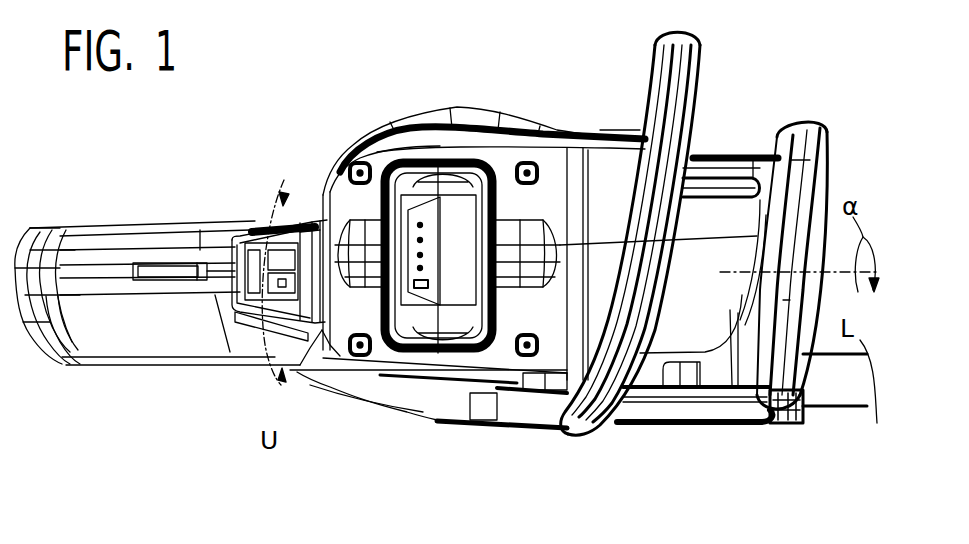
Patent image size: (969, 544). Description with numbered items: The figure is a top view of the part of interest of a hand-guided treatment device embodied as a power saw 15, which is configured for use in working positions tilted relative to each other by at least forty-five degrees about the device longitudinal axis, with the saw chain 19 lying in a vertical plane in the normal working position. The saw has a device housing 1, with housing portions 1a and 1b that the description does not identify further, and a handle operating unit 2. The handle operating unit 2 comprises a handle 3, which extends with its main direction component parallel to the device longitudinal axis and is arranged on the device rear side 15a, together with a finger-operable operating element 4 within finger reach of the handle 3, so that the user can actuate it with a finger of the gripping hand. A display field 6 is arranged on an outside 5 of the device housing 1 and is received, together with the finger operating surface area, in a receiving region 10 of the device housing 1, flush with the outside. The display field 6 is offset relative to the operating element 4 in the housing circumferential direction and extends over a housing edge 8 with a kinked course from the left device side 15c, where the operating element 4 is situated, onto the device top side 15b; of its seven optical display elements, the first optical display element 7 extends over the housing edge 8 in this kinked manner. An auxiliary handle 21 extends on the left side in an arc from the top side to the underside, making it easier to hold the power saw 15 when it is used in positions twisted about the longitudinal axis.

The device housing 1 is at (525, 120).
The upper housing portion 1a is at (355, 142).
The lower housing portion 1b is at (130, 232).
The handle operating unit 2 is at (205, 245).
The handle 3 is at (232, 298).
The operating element 4 is at (292, 228).
The outside 5 is at (240, 238).
The display field 6 is at (205, 270).
The optical display element 7 is at (176, 282).
The housing edge 8 is at (258, 230).
The receiving region 10 is at (298, 332).
The power saw 15 is at (678, 432).
The device rear side 15a is at (250, 312).
The device top side 15b is at (555, 225).
The left device side 15c is at (316, 202).
The saw chain 19 is at (847, 410).
The auxiliary handle 21 is at (700, 92).